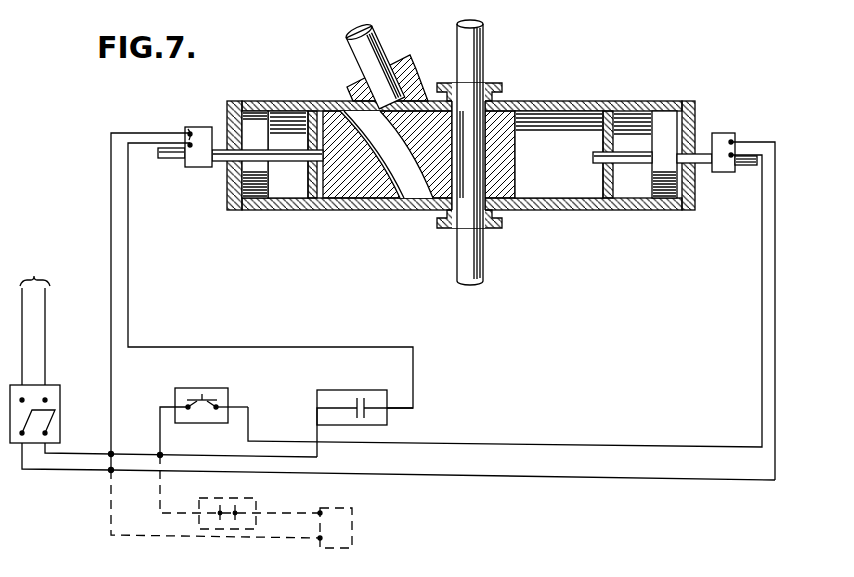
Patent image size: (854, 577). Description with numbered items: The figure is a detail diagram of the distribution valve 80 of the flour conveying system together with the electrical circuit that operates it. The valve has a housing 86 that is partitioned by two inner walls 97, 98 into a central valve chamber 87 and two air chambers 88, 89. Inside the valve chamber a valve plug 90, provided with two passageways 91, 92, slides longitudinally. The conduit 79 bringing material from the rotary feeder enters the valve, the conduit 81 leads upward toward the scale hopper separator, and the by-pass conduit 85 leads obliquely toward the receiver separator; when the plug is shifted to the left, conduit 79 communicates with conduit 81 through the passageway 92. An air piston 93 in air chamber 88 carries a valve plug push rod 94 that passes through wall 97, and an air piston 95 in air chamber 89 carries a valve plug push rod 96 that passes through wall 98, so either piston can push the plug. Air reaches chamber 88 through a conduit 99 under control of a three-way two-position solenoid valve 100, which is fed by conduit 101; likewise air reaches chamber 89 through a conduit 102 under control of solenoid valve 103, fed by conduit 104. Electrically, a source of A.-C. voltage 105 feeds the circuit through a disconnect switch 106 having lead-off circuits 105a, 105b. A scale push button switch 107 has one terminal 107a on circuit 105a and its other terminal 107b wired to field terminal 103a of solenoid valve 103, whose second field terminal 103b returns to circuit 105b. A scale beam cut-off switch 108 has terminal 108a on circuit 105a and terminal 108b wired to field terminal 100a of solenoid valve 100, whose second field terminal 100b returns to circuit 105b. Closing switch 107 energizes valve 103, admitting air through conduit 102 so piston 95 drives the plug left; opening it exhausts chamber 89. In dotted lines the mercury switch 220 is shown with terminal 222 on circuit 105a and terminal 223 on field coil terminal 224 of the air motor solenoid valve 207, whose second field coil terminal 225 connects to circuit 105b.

The conduit 79 is at (486, 259).
The distribution valve 80 is at (560, 210).
The conduit 81 is at (488, 43).
The by-pass conduit 85 is at (380, 44).
The housing 86 is at (575, 104).
The valve chamber 87 is at (536, 127).
The air chamber 88 is at (287, 137).
The air chamber 89 is at (634, 124).
The valve plug 90 is at (353, 199).
The passageway 91 is at (411, 192).
The passageway 92 is at (522, 183).
The air piston 93 is at (267, 199).
The valve plug push rod 94 is at (280, 163).
The air piston 95 is at (661, 199).
The valve plug push rod 96 is at (632, 164).
The inner wall 97 is at (313, 199).
The inner wall 98 is at (608, 199).
The conduit 99 is at (218, 162).
The solenoid actuated control valve 100 is at (200, 168).
The field terminal 100a is at (203, 126).
The field terminal 100b is at (187, 132).
The conduit 101 is at (160, 166).
The conduit 102 is at (700, 158).
The solenoid valve 103 is at (718, 133).
The field terminal 103a is at (733, 156).
The field terminal 103b is at (734, 141).
The conduit 104 is at (745, 166).
The source of A.-C. voltage 105 is at (33, 329).
The lead-off circuit 105a is at (181, 446).
The lead-off circuit 105b is at (66, 471).
The disconnect switch 106 is at (60, 386).
The scale push button switch 107 is at (198, 424).
The terminal 107a is at (187, 406).
The terminal 107b is at (217, 406).
The scale beam cut-off switch 108 is at (388, 420).
The terminal 108a is at (353, 406).
The terminal 108b is at (365, 405).
The mercury switch 220 is at (222, 498).
The terminal 222 is at (218, 514).
The terminal 223 is at (237, 513).
The field coil terminal 224 is at (321, 508).
The field coil terminal 225 is at (319, 540).
The solenoid valve 207 is at (347, 519).